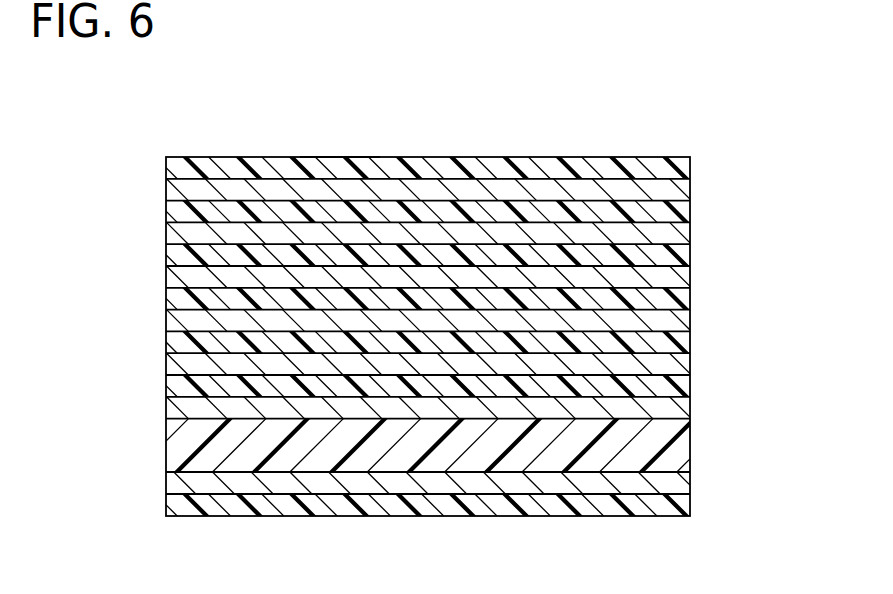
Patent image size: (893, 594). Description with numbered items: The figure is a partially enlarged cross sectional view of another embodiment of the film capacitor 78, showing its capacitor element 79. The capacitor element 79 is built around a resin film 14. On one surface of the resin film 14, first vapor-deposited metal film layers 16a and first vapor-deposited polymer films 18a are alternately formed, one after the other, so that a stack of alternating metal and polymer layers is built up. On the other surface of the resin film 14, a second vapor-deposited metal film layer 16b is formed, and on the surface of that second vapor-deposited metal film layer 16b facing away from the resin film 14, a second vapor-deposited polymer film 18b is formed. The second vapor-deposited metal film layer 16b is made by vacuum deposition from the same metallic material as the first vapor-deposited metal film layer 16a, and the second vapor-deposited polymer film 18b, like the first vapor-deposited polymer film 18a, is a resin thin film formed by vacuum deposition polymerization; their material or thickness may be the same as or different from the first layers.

The resin film 14 is at (188, 442).
The first vapor-deposited metal film layer 16a is at (182, 192).
The first vapor-deposited polymer film 18a is at (578, 165).
The second vapor-deposited metal film layer 16b is at (658, 483).
The second vapor-deposited polymer film 18b is at (238, 508).
The film capacitor 78 is at (465, 132).
The capacitor element 79 is at (338, 157).